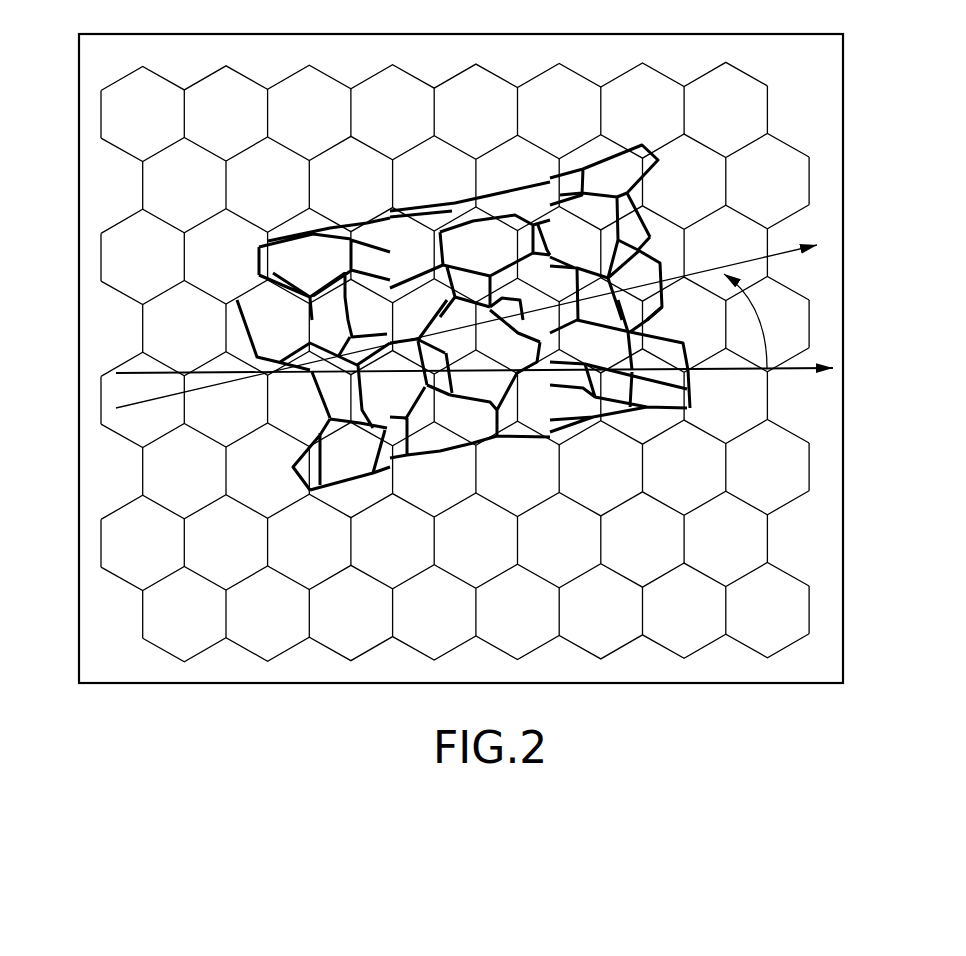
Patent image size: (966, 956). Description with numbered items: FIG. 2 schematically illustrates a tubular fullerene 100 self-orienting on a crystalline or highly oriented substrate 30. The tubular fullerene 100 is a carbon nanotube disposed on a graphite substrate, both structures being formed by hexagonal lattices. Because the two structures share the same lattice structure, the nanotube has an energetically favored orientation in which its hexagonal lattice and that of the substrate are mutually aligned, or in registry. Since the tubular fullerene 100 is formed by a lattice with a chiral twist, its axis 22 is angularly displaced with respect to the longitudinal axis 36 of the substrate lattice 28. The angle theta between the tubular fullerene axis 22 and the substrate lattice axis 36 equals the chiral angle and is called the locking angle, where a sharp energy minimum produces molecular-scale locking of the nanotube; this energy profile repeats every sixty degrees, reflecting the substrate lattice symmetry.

The axis of the tubular fullerene 22 is at (786, 250).
The substrate lattice 28 is at (808, 497).
The substrate 30 is at (822, 110).
The longitudinal axis of the substrate lattice 36 is at (797, 371).
The tubular fullerene 100 is at (635, 178).